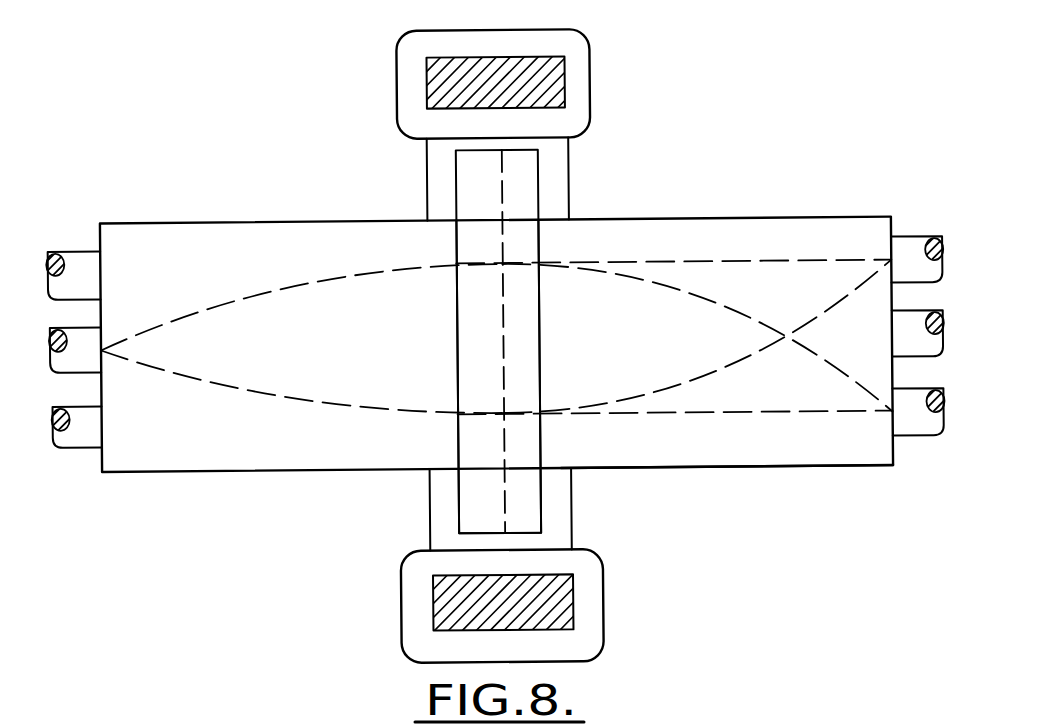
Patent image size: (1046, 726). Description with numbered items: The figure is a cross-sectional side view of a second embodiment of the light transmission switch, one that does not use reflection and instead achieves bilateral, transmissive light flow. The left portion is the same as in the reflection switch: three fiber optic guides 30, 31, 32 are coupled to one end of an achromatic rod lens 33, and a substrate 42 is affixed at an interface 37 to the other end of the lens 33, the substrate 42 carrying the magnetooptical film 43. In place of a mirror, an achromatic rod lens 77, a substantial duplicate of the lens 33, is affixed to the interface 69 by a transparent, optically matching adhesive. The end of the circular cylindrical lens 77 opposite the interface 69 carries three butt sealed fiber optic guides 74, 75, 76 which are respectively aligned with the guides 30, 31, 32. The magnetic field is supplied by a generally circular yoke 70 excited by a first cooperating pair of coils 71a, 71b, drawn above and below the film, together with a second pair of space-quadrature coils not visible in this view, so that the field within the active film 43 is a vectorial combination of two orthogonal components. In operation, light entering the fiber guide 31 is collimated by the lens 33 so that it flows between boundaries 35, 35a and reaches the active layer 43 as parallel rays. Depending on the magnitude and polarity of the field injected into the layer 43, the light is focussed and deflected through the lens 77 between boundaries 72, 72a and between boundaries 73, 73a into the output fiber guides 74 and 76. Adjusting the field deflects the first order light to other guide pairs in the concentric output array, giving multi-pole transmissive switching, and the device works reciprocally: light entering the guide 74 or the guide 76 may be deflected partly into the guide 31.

The fiber optic guide 30 is at (88, 248).
The fiber optic guide 31 is at (56, 312).
The fiber optic guide 32 is at (88, 445).
The achromatic lens 33 is at (247, 220).
The boundary 35 is at (226, 300).
The boundary 35a is at (246, 394).
The interface 37 is at (457, 334).
The substrate 42 is at (457, 181).
The magnetooptical film 43 is at (540, 491).
The interface 69 is at (540, 336).
The yoke 70 is at (427, 85).
The coil 71a is at (592, 83).
The coil 71b is at (604, 604).
The boundary 72 is at (712, 263).
The boundary 72a is at (621, 401).
The boundary 73 is at (750, 320).
The boundary 73a is at (740, 415).
The fiber optic guide 74 is at (920, 240).
The fiber optic guide 75 is at (918, 314).
The fiber optic guide 76 is at (925, 440).
The achromatic rod lens 77 is at (722, 458).